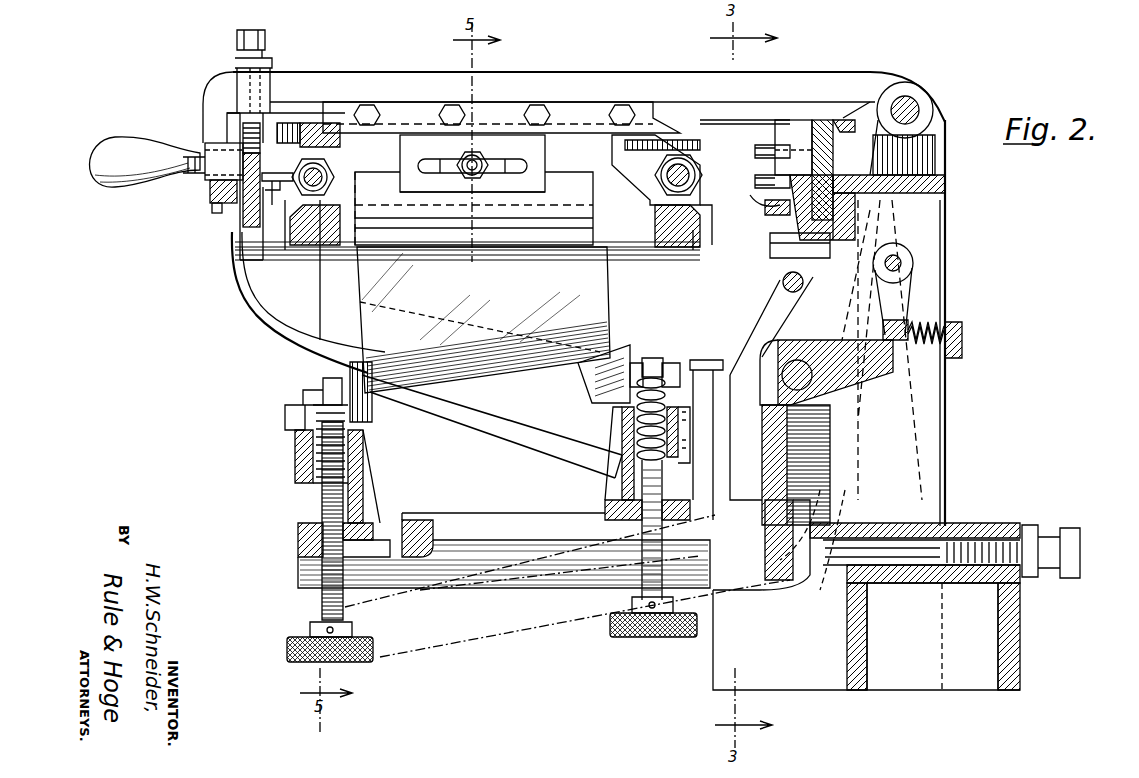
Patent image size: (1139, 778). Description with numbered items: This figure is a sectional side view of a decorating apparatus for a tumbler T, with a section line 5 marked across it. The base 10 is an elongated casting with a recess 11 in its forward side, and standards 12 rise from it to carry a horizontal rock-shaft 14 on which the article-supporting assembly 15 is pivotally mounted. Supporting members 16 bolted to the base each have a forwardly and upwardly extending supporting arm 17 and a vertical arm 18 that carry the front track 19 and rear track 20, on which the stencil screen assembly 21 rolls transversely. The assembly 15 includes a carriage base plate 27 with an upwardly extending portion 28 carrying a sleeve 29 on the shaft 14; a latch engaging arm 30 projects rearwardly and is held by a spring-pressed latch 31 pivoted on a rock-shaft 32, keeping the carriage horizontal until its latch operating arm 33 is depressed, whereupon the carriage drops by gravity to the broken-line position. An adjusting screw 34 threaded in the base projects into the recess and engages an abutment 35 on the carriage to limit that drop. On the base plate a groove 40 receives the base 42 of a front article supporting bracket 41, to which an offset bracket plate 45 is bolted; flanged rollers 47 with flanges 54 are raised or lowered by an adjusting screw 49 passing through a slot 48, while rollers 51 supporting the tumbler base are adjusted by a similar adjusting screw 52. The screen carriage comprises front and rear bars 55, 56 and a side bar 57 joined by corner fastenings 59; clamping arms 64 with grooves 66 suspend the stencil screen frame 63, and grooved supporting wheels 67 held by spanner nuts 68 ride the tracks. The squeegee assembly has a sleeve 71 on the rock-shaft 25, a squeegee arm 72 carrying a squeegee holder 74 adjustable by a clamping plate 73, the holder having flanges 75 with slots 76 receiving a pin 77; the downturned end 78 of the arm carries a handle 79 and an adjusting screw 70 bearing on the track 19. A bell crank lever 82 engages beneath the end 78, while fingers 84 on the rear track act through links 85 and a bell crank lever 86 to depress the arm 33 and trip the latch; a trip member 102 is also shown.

The base 10 is at (527, 238).
The recess 11 is at (825, 685).
The standards 12 is at (935, 245).
The rock-shaft 14 is at (755, 372).
The article-supporting assembly 15 is at (661, 357).
The supporting members 16 is at (484, 427).
The supporting arm 17 is at (228, 260).
The vertically extending arm 18 is at (775, 310).
The front track 19 is at (252, 220).
The rear track 20 is at (870, 178).
The stencil screen assembly 21 is at (745, 210).
The rock-shaft 25 is at (912, 103).
The base plate 27 is at (500, 585).
The upwardly extending portion 28 is at (765, 462).
The sleeve 29 is at (762, 345).
The latch engaging arm 30 is at (862, 380).
The latch 31 is at (902, 300).
The rock-shaft 32 is at (903, 265).
The latch operating arm 33 is at (800, 290).
The adjusting screw 34 is at (1052, 532).
The abutment 35 is at (792, 580).
The groove 40 is at (400, 570).
The front article supporting bracket 41 is at (366, 472).
The base 42 is at (370, 520).
The offset bracket plate 45 is at (297, 452).
The article-supporting rollers 47 is at (372, 420).
The longitudinal slot 48 is at (372, 622).
The adjusting screw 49 is at (375, 647).
The rollers 51 is at (582, 385).
The adjusting screw 52 is at (635, 612).
The flange 54 is at (372, 430).
The front bar 55 is at (335, 172).
The rear bar 56 is at (700, 162).
The side bar 57 is at (748, 118).
The corner fastenings 59 is at (660, 120).
The section line 5 is at (648, 242).
The stencil screen frame 63 is at (318, 240).
The clamping arms 64 is at (300, 232).
The grooves 66 is at (290, 252).
The supporting wheel 67 is at (825, 125).
The spanner nut 68 is at (848, 120).
The adjusting screw 70 is at (255, 32).
The sleeve 71 is at (935, 118).
The squeegee arm 72 is at (590, 82).
The clamping plate 73 is at (580, 107).
The squeegee holder 74 is at (547, 158).
The flanges 75 is at (548, 190).
The slots 76 is at (510, 166).
The pin 77 is at (470, 172).
The end 78 is at (205, 136).
The handle 79 is at (110, 183).
The bell crank lever 82 is at (215, 200).
The fingers 84 is at (792, 130).
The links 85 is at (758, 165).
The bell crank lever 86 is at (752, 195).
The trip member 102 is at (272, 173).
The tumbler T is at (600, 296).